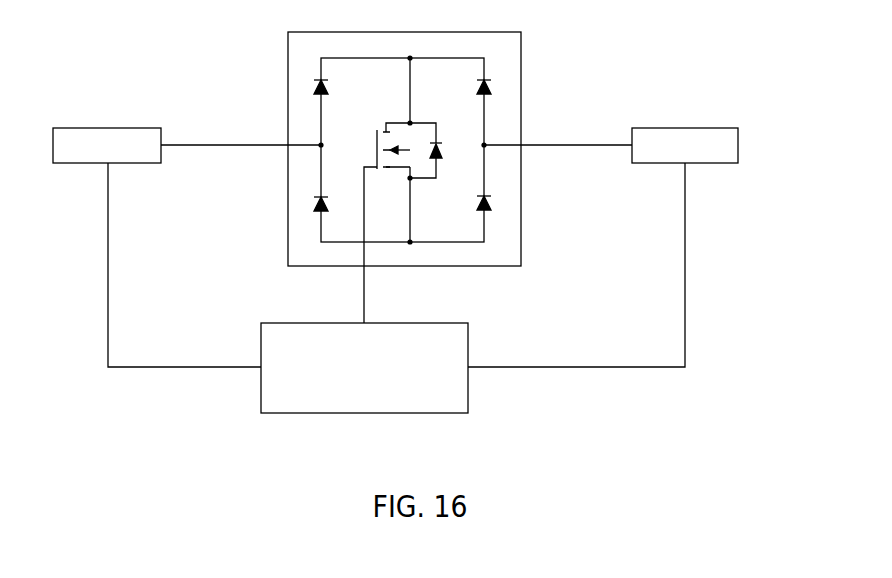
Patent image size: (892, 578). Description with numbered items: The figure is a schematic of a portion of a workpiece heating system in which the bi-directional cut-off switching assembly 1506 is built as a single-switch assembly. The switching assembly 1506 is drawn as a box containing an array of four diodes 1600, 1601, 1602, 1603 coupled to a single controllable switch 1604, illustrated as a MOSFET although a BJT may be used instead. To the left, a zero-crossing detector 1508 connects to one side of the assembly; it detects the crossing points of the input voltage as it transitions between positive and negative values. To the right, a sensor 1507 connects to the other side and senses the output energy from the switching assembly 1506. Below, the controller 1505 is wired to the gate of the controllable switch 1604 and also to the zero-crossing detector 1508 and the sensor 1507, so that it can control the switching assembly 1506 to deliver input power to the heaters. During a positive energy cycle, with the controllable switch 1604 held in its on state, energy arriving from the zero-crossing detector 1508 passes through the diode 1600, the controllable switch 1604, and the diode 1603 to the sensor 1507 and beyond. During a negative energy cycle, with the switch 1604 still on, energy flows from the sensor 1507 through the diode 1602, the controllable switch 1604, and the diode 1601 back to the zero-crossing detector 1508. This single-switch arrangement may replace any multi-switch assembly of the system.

The controller 1505 is at (330, 320).
The bi-directional cut-off switching assembly 1506 is at (442, 267).
The sensor 1507 is at (700, 167).
The zero-crossing detector 1508 is at (122, 167).
The diode 1600 is at (313, 90).
The diode 1601 is at (313, 207).
The diode 1602 is at (492, 90).
The diode 1603 is at (492, 207).
The controllable switch 1604 is at (394, 123).